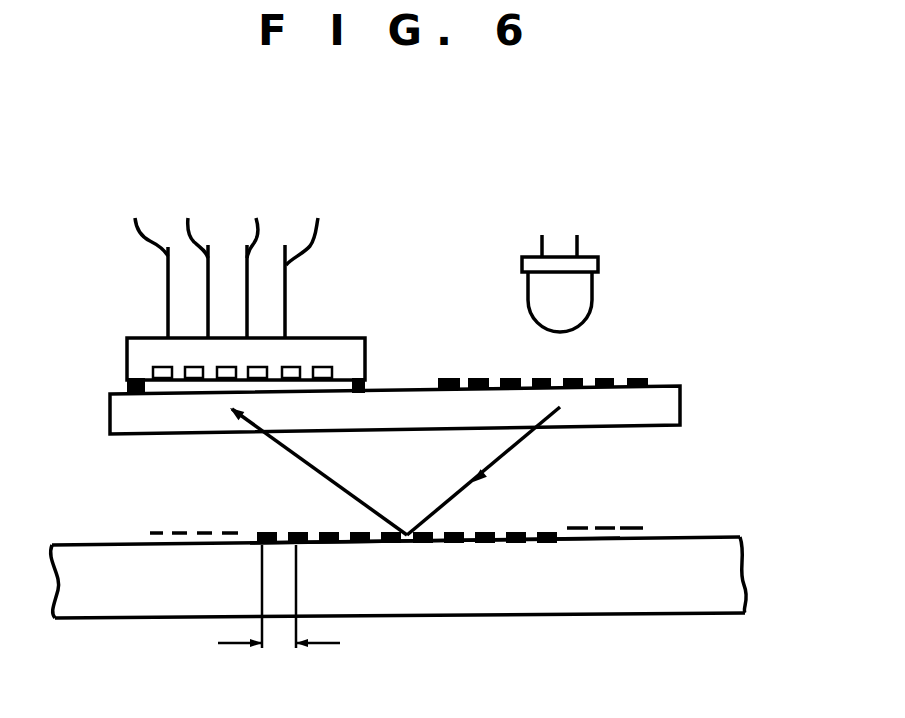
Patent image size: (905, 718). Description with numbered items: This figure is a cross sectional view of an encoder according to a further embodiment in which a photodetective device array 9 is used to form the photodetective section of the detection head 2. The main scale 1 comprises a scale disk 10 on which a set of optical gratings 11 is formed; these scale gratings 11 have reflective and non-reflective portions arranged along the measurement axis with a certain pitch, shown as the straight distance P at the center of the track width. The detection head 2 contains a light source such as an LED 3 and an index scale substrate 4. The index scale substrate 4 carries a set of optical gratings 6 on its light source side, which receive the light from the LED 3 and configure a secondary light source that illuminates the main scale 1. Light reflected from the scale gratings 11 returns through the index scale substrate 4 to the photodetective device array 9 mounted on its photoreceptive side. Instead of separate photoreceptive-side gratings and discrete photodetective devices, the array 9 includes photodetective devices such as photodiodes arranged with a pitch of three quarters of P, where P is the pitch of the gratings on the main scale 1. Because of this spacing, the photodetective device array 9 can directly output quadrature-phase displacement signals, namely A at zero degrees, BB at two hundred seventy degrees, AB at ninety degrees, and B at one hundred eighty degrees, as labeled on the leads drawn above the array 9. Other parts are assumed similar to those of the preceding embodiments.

The main scale 1 is at (717, 582).
The detection head 2 is at (702, 248).
The LED 3 is at (596, 288).
The index scale substrate 4 is at (682, 397).
The optical gratings 6 is at (607, 379).
The photodetective device array 9 is at (127, 357).
The scale disk 10 is at (690, 548).
The optical gratings (scale gratings) 11 is at (547, 529).
The pitch P is at (279, 623).